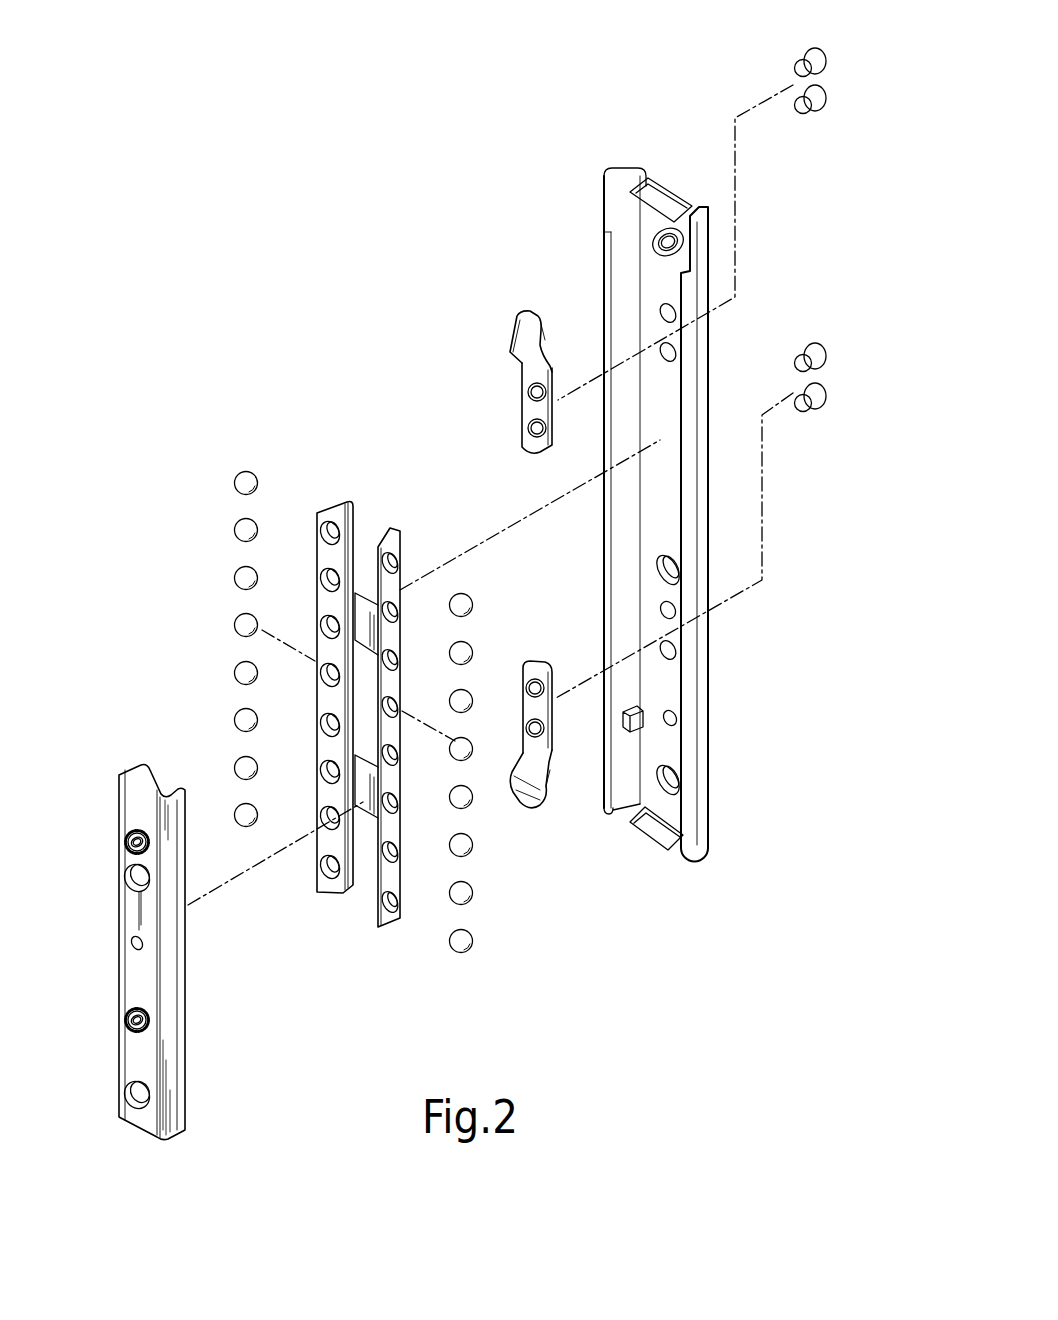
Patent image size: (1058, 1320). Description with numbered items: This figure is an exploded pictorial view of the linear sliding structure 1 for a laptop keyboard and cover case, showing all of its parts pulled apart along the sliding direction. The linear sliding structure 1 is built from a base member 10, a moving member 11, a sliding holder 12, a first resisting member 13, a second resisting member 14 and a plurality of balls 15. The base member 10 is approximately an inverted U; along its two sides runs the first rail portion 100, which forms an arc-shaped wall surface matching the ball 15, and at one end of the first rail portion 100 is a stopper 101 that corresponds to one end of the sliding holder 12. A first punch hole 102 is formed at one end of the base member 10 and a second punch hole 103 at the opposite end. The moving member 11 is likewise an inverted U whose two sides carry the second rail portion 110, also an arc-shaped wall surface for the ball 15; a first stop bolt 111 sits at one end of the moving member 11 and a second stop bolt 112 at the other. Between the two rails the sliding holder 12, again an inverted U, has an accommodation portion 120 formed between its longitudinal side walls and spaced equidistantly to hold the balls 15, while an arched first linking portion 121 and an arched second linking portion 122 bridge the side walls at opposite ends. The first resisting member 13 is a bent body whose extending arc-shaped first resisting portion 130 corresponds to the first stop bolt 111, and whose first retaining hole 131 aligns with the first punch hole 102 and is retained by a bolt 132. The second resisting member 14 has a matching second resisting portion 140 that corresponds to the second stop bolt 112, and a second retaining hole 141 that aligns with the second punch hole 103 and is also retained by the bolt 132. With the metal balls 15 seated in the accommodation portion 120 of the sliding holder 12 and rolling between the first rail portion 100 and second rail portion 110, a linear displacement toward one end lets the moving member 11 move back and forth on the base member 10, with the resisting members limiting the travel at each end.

The linear sliding structure 1 is at (328, 180).
The base member 10 is at (718, 738).
The first rail portion 100 is at (617, 190).
The stopper 101 is at (646, 717).
The first punch hole 102 is at (675, 352).
The second punch hole 103 is at (681, 648).
The moving member 11 is at (193, 1063).
The second rail portion 110 is at (175, 963).
The first stop bolt 111 is at (125, 832).
The second stop bolt 112 is at (124, 1023).
The sliding holder 12 is at (333, 497).
The accommodation portion 120 is at (399, 560).
The first linking portion 121 is at (377, 642).
The second linking portion 122 is at (377, 785).
The first resisting member 13 is at (513, 308).
The first resisting portion 130 is at (511, 340).
The first retaining hole 131 is at (525, 392).
The bolt 132 is at (797, 53).
The second resisting member 14 is at (530, 820).
The second resisting portion 140 is at (537, 796).
The second retaining hole 141 is at (531, 670).
The ball 15 is at (238, 473).